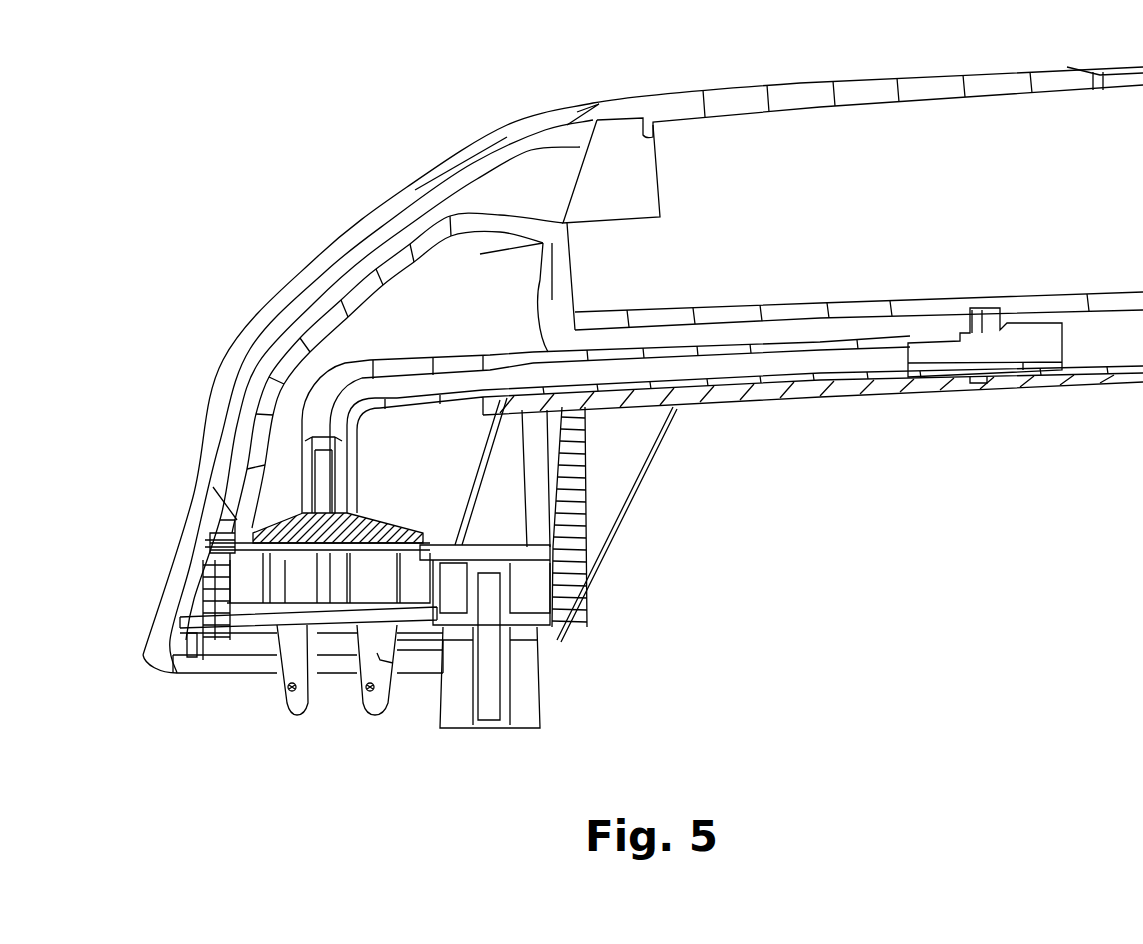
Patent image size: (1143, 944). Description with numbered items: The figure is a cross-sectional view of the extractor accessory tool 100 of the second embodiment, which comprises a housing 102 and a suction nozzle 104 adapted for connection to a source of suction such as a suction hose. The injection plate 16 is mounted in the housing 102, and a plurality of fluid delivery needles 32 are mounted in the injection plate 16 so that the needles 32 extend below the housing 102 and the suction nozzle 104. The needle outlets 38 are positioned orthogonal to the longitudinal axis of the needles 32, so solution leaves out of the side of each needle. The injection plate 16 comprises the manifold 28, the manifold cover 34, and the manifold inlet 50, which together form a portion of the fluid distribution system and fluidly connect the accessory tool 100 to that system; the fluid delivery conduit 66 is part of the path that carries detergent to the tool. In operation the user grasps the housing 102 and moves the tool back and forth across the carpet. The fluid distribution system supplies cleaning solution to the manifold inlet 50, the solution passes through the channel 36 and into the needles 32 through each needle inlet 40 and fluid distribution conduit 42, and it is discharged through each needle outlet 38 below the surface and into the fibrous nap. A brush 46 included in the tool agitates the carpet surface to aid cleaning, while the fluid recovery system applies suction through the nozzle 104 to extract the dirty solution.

The extractor accessory tool 100 is at (363, 52).
The housing 102 is at (343, 310).
The suction nozzle 104 is at (192, 427).
The injection plate 16 is at (233, 527).
The manifold 28 is at (218, 672).
The fluid delivery needles 32 is at (293, 712).
The manifold cover 34 is at (240, 490).
The channel 36 is at (240, 577).
The needle outlets 38 is at (288, 690).
The needle inlet 40 is at (372, 560).
The fluid distribution conduit 42 is at (393, 663).
The brush 46 is at (522, 736).
The manifold inlet 50 is at (300, 500).
The fluid delivery conduit 66 is at (887, 398).